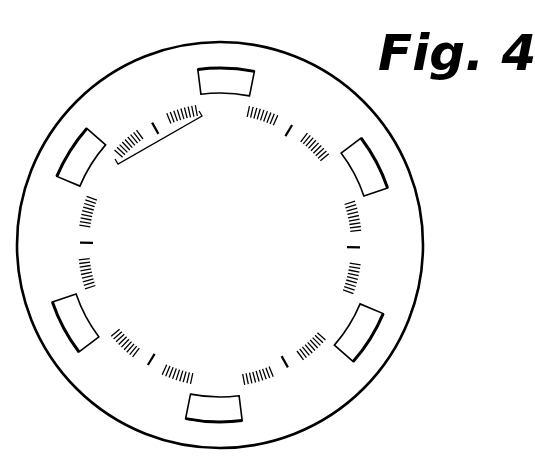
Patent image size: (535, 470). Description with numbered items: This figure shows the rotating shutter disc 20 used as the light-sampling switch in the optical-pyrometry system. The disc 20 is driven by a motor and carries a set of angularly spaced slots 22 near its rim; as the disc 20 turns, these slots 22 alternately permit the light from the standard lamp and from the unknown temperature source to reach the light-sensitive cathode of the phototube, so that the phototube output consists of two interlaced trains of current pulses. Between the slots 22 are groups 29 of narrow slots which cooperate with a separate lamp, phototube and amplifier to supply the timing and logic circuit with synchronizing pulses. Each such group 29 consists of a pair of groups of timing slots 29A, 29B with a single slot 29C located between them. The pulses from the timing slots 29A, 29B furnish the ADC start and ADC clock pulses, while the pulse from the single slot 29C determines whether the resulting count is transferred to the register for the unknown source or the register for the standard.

The rotating shutter disc 20 is at (382, 125).
The angularly spaced slots 22 is at (243, 83).
The groups of narrow slots 29 is at (152, 146).
The group of timing slots 29A is at (137, 125).
The group of timing slots 29B is at (198, 101).
The single slot 29C is at (153, 125).